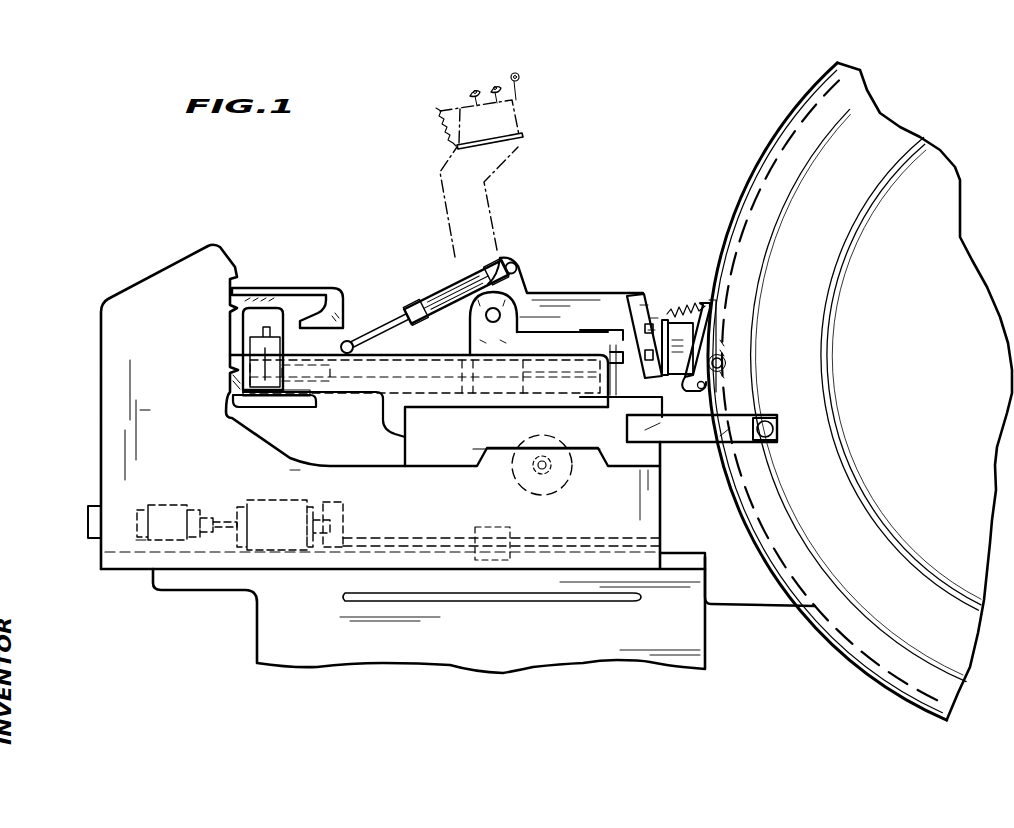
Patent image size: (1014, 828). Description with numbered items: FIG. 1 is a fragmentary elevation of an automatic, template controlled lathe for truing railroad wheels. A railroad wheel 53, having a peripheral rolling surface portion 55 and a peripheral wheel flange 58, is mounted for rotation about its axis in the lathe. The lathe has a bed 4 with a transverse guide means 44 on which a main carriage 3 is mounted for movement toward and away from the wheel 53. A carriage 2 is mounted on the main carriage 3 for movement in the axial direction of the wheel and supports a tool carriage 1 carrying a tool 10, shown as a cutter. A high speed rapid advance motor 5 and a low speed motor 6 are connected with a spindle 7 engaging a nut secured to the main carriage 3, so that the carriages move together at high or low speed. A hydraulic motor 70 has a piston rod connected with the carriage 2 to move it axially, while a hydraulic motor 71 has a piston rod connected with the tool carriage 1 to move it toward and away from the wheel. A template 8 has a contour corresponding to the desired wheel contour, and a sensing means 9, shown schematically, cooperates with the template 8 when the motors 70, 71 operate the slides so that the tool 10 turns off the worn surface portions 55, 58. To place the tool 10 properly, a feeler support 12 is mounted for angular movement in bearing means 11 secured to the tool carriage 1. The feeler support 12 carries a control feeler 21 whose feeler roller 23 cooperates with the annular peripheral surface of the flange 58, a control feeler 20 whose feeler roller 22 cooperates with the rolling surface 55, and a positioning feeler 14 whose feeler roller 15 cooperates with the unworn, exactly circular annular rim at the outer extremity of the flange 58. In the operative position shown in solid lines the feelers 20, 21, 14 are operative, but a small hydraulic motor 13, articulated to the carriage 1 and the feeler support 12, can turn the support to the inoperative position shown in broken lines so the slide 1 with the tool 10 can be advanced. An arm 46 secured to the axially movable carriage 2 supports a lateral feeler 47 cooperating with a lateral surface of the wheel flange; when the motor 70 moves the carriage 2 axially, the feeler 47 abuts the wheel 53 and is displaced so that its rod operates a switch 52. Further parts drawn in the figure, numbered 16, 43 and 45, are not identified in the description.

The tool carriage 1 is at (530, 380).
The carriage 2 is at (412, 448).
The main carriage 3 is at (661, 520).
The bed 4 is at (262, 627).
The high speed rapid advance motor 5 is at (258, 512).
The low speed motor 6 is at (165, 512).
The spindle 7 is at (383, 538).
The template 8 is at (314, 315).
The sensing means 9 is at (263, 331).
The tool 10 is at (606, 383).
The bearing means 11 is at (470, 338).
The feeler support 12 is at (533, 292).
The hydraulic motor 13 is at (438, 298).
The positioning feeler 14 is at (440, 111).
The feeler roller 15 is at (520, 75).
The spring 16 is at (432, 155).
The control feeler 20 is at (716, 335).
The control feeler 21 is at (722, 353).
The feeler roller 22 is at (472, 90).
The feeler roller 23 is at (496, 86).
The clamp 43 is at (640, 343).
The transverse guide means 44 is at (700, 578).
The lever 45 is at (645, 300).
The arm 46 is at (660, 445).
The lateral feeler 47 is at (901, 374).
The switch 52 is at (770, 443).
The railroad wheel 53 is at (818, 622).
The peripheral rolling surface portion 55 is at (888, 652).
The peripheral wheel flange 58 is at (829, 396).
The hydraulic motor 70 is at (548, 492).
The hydraulic motor 71 is at (276, 400).